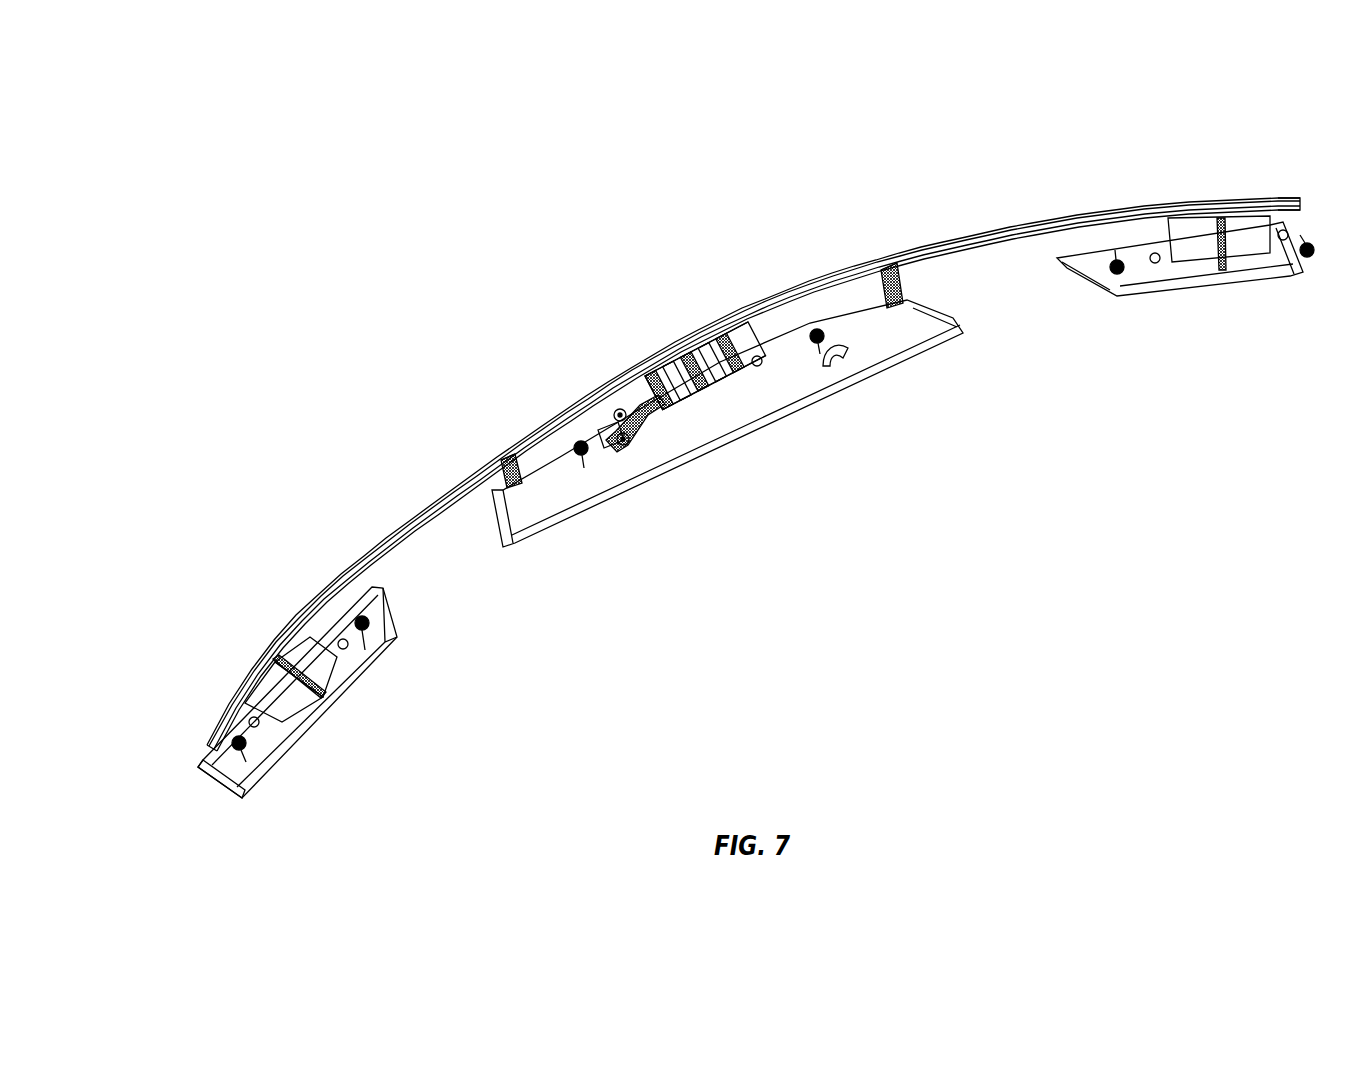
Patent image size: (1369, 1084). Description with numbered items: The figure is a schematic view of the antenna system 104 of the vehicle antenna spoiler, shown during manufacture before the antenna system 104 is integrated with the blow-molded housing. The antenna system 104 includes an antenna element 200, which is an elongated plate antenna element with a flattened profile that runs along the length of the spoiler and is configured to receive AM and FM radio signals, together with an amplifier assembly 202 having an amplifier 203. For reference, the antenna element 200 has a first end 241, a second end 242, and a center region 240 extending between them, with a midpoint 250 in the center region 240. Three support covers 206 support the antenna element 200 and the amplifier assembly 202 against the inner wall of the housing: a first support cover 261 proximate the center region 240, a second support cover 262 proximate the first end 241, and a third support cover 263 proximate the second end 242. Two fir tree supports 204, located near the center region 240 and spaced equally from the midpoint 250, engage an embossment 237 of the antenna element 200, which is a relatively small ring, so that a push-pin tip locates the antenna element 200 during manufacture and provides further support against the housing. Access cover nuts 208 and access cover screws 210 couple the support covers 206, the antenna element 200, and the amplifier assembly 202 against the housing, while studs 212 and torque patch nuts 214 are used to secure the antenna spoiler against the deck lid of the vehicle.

The antenna system 104 is at (338, 526).
The antenna element 200 is at (423, 512).
The amplifier assembly 202 is at (728, 338).
The amplifier 203 is at (697, 410).
The supports 204 is at (493, 462).
The support covers 206 is at (750, 510).
The access cover nuts 208 is at (689, 471).
The access cover screws 210 is at (250, 718).
The studs 212 is at (773, 487).
The torque patch nuts 214 is at (362, 632).
The embossment 237 is at (503, 458).
The center region 240 is at (695, 314).
The first end 241 is at (198, 745).
The second end 242 is at (1301, 204).
The midpoint 250 is at (672, 346).
The first support cover 261 is at (898, 361).
The second support cover 262 is at (399, 640).
The third support cover 263 is at (1143, 302).